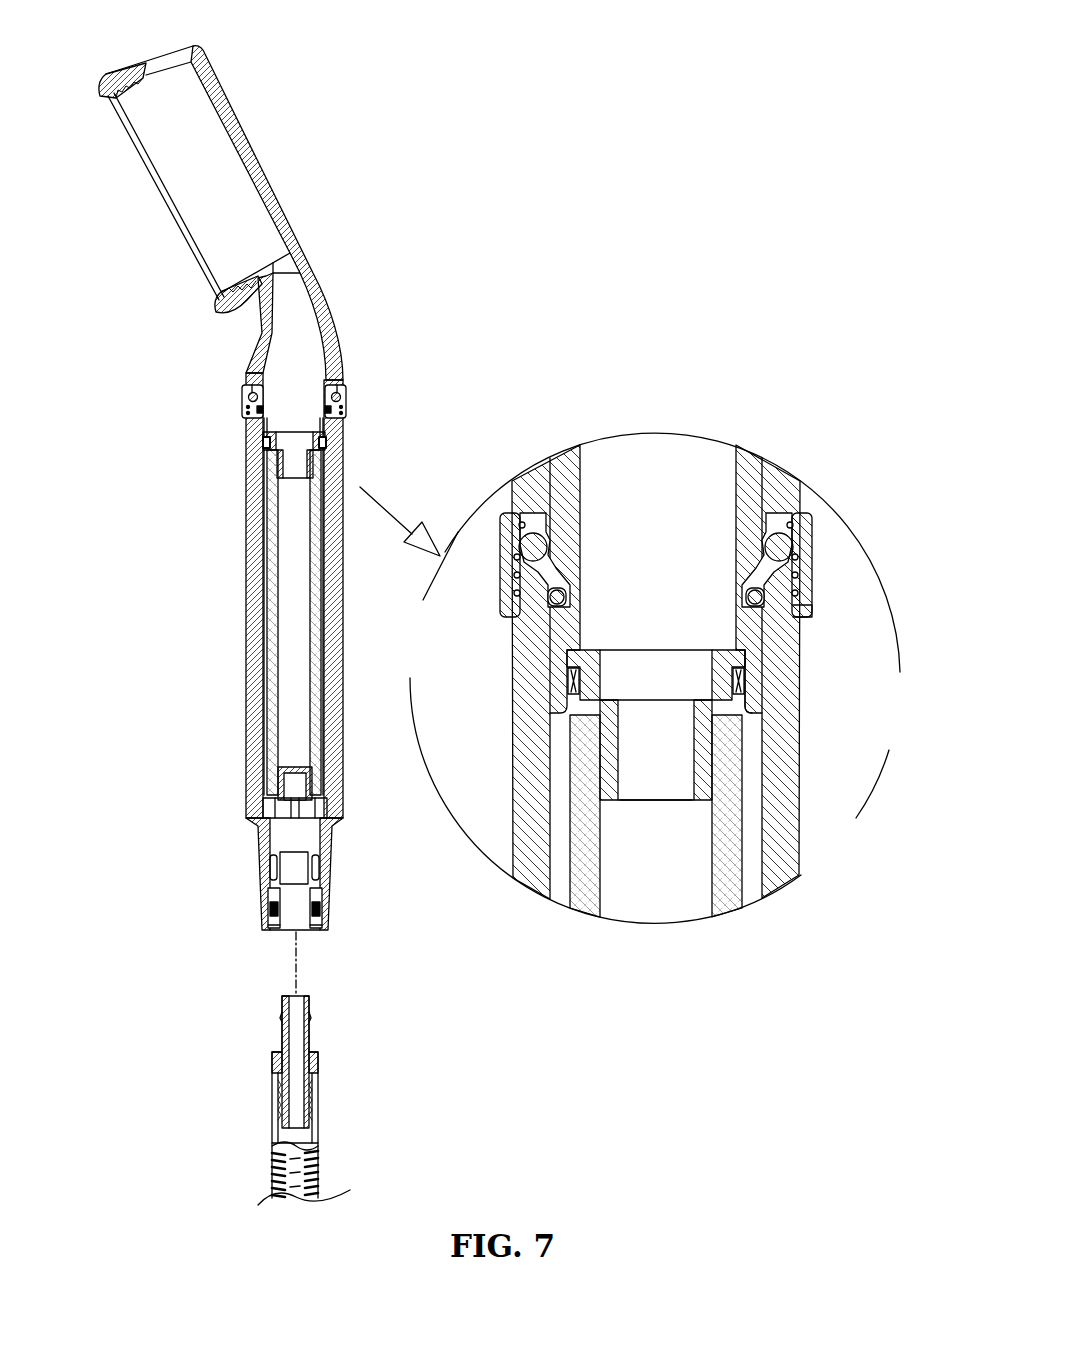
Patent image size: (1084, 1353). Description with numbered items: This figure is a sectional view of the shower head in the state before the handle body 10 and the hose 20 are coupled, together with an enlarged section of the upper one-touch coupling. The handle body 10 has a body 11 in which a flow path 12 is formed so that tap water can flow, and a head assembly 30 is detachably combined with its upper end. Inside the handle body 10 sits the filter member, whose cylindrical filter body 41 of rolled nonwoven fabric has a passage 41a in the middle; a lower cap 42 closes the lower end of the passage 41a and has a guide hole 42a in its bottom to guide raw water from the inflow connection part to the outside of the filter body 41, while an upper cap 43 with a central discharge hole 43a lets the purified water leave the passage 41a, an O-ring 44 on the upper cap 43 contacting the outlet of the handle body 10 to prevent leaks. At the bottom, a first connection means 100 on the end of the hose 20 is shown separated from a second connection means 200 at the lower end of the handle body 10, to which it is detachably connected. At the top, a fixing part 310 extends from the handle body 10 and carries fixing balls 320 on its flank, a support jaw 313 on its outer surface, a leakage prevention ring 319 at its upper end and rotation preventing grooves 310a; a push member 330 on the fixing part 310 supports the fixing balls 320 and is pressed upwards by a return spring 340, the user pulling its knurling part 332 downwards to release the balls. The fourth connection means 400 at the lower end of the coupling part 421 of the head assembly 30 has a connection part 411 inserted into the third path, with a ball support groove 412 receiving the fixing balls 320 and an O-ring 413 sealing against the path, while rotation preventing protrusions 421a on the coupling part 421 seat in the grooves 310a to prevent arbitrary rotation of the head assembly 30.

The handle body 10 is at (240, 660).
The body 11 is at (250, 574).
The flow path 12 is at (324, 746).
The hose 20 is at (332, 1165).
The head assembly 30 is at (272, 150).
The filter body 41 is at (272, 692).
The passage 41a is at (291, 692).
The lower cap 42 is at (273, 806).
The guide hole 42a is at (318, 808).
The upper cap 43 is at (290, 478).
The discharge hole 43a is at (658, 672).
The O-ring 44 is at (262, 441).
The first connection means 100 is at (330, 1048).
The second connection means 200 is at (256, 885).
The fixing part 310 is at (793, 570).
The rotation preventing groove 310a is at (787, 513).
The support jaw 313 is at (808, 607).
The leakage prevention ring 319 is at (512, 484).
The fixing ball 320 is at (812, 535).
The push member 330 is at (362, 403).
The knurling part 332 is at (505, 588).
The return spring 340 is at (510, 603).
The fourth connection means 400 is at (345, 338).
The connection part 411 is at (752, 656).
The ball support groove 412 is at (767, 545).
The O-ring 413 is at (769, 614).
The coupling part 421 is at (540, 473).
The rotation preventing protrusion 421a is at (582, 497).